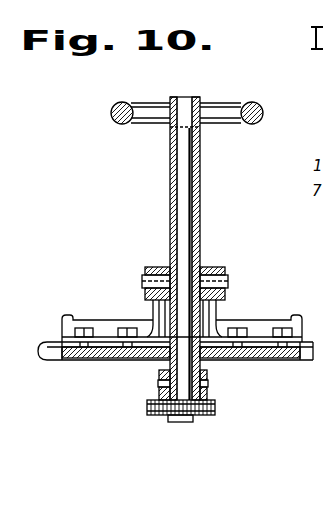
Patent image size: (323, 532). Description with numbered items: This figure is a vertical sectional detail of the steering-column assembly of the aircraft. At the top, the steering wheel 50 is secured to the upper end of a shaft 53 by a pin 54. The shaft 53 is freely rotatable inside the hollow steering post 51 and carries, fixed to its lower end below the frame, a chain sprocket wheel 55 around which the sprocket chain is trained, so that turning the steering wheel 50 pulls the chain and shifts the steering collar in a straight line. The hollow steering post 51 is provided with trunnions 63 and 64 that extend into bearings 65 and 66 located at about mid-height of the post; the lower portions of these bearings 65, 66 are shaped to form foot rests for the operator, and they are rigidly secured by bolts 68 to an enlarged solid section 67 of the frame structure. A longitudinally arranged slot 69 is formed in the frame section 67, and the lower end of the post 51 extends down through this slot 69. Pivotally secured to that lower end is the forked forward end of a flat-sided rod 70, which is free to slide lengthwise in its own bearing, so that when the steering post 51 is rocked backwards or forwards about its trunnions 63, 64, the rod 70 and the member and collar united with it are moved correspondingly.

The steering wheel 50 is at (122, 103).
The hollow steering post 51 is at (200, 207).
The shaft 53 is at (180, 176).
The pin 54 is at (200, 128).
The chain sprocket wheel 55 is at (160, 415).
The trunnion 63 is at (228, 282).
The trunnion 64 is at (142, 281).
The bearing 65 is at (222, 267).
The bearing 66 is at (149, 267).
The enlarged solid section of the frame structure 67 is at (96, 360).
The bolts 68 is at (122, 328).
The longitudinally arranged slot 69 is at (213, 360).
The flat-sided rod 70 is at (159, 372).